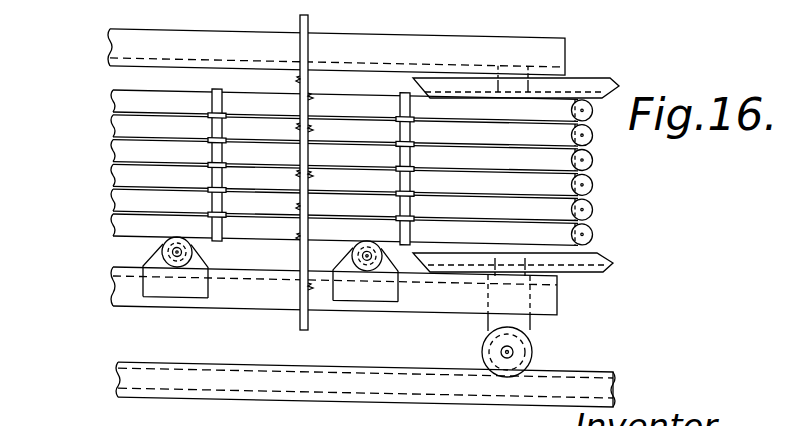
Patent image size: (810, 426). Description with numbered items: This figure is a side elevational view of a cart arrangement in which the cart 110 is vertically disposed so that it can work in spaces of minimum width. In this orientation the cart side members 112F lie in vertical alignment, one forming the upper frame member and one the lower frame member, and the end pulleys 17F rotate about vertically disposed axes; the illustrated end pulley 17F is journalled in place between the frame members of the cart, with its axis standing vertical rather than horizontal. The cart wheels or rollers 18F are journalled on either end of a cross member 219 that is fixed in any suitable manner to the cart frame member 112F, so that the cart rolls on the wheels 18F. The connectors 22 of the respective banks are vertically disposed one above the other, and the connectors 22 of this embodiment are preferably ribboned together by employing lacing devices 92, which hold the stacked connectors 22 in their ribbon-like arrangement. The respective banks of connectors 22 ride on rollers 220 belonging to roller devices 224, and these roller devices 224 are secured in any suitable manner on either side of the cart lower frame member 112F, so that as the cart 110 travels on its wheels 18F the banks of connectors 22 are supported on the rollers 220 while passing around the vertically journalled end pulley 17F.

The cart 110 is at (567, 51).
The cart side member 112F is at (473, 43).
The end pulley 17F is at (611, 73).
The connector 22 is at (375, 127).
The lacing device 92 is at (217, 81).
The roller 220 is at (158, 247).
The roller device 224 is at (147, 269).
The cross member 219 is at (523, 327).
The cart wheel 18F is at (533, 352).